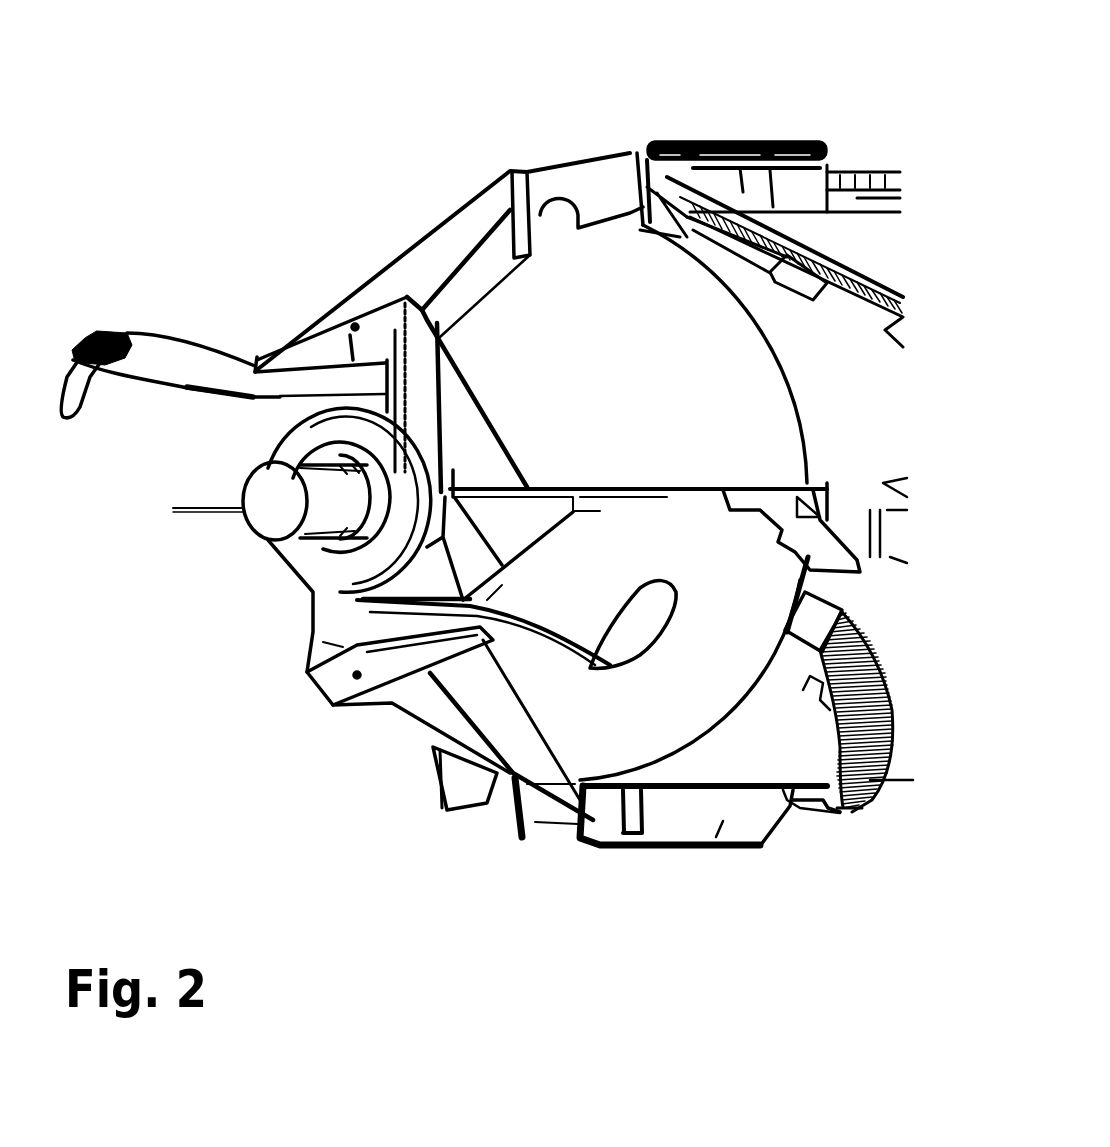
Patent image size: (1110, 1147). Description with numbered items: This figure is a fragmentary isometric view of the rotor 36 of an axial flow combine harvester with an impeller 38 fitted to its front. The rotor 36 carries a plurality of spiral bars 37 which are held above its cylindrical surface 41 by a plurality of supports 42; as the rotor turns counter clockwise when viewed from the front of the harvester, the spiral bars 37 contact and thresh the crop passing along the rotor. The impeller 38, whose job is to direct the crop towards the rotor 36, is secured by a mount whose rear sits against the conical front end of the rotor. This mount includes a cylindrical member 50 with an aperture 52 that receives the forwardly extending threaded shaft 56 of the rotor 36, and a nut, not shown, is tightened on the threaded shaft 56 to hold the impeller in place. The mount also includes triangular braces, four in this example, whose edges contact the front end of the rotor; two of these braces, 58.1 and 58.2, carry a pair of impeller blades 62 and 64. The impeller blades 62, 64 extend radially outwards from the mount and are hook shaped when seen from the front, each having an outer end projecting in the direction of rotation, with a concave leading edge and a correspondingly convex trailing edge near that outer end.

The rotor 36 is at (880, 608).
The spiral bars 37 is at (853, 253).
The impeller 38 is at (199, 351).
The cylindrical surface 41 is at (767, 740).
The supports 42 is at (800, 273).
The cylindrical member 50 is at (330, 595).
The aperture 52 is at (385, 553).
The threaded shaft 56 is at (270, 510).
The triangular brace 58.1 is at (437, 253).
The triangular brace 58.2 is at (527, 757).
The impeller blade 62 is at (128, 352).
The impeller blade 64 is at (550, 640).